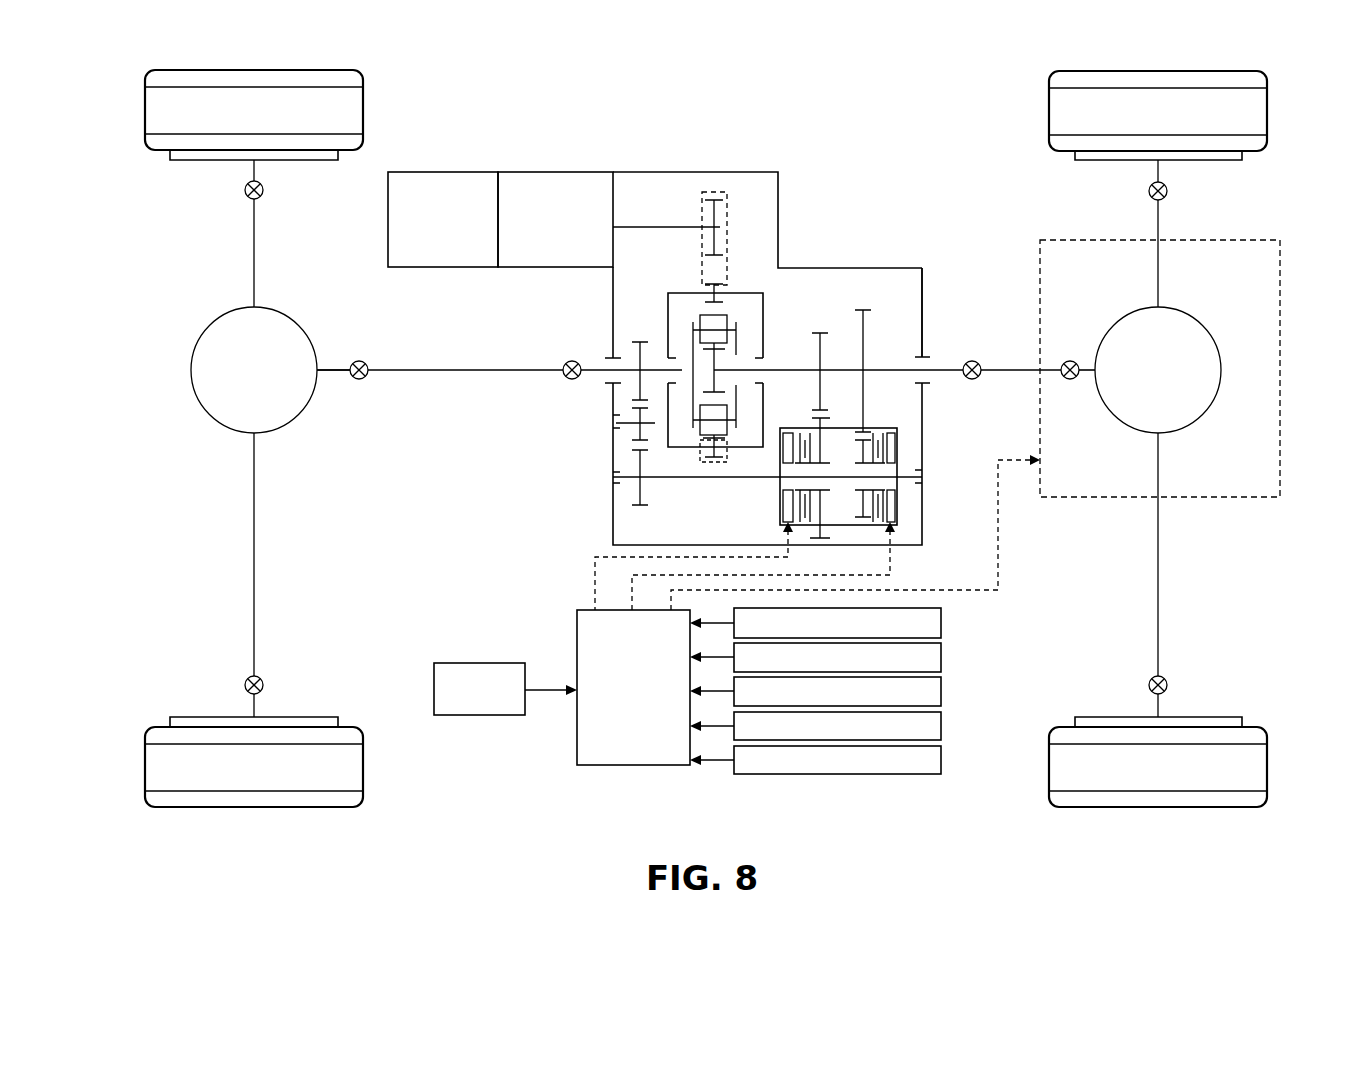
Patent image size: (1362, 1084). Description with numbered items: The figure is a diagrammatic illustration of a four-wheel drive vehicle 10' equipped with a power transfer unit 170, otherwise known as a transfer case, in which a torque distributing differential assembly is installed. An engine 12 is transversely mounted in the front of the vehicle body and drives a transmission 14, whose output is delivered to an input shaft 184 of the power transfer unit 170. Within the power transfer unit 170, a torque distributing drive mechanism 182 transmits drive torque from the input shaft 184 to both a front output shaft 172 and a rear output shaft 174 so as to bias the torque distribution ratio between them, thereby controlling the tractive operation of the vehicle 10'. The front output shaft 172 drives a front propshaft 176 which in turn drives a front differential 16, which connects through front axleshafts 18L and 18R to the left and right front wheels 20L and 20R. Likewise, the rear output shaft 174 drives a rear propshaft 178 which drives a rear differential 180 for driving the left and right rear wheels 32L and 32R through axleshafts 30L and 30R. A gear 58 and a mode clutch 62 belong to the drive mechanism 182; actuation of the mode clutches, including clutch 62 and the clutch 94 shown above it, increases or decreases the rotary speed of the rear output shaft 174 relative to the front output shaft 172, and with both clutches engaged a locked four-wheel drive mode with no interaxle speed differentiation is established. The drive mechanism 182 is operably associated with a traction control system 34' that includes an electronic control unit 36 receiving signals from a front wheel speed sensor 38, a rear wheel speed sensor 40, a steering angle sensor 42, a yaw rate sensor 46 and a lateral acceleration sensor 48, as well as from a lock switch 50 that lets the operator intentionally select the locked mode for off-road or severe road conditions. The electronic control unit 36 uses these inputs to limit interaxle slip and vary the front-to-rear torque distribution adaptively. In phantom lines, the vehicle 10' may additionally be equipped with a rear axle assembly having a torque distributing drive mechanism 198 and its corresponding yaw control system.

The four-wheel drive vehicle 10' is at (403, 441).
The engine 12 is at (467, 185).
The transmission 14 is at (562, 185).
The front differential 16 is at (211, 363).
The front axleshaft 18R is at (255, 222).
The front axleshaft 18L is at (255, 560).
The front wheel 20R is at (345, 100).
The front wheel 20L is at (347, 765).
The axleshaft 30R is at (1158, 221).
The axleshaft 30L is at (1160, 598).
The rear wheel 32R is at (1253, 107).
The rear wheel 32L is at (1252, 767).
The traction control system 34' is at (571, 711).
The electronic control unit 36 is at (602, 750).
The front wheel speed sensor 38 is at (926, 622).
The rear wheel speed sensor 40 is at (926, 656).
The steering angle sensor 42 is at (926, 690).
The yaw rate sensor 46 is at (926, 724).
The lateral acceleration sensor 48 is at (926, 758).
The lock switch 50 is at (445, 672).
The gear 58 is at (841, 325).
The mode clutch 62 is at (910, 520).
The clutch 94 is at (907, 448).
The power transfer unit 170 is at (800, 248).
The front output shaft 172 is at (591, 370).
The rear output shaft 174 is at (947, 370).
The front propshaft 176 is at (443, 370).
The rear propshaft 178 is at (1000, 373).
The rear differential 180 is at (1207, 380).
The torque distributing drive mechanism 182 is at (905, 292).
The input shaft 184 is at (657, 226).
The torque distributing drive mechanism 198 is at (1188, 335).